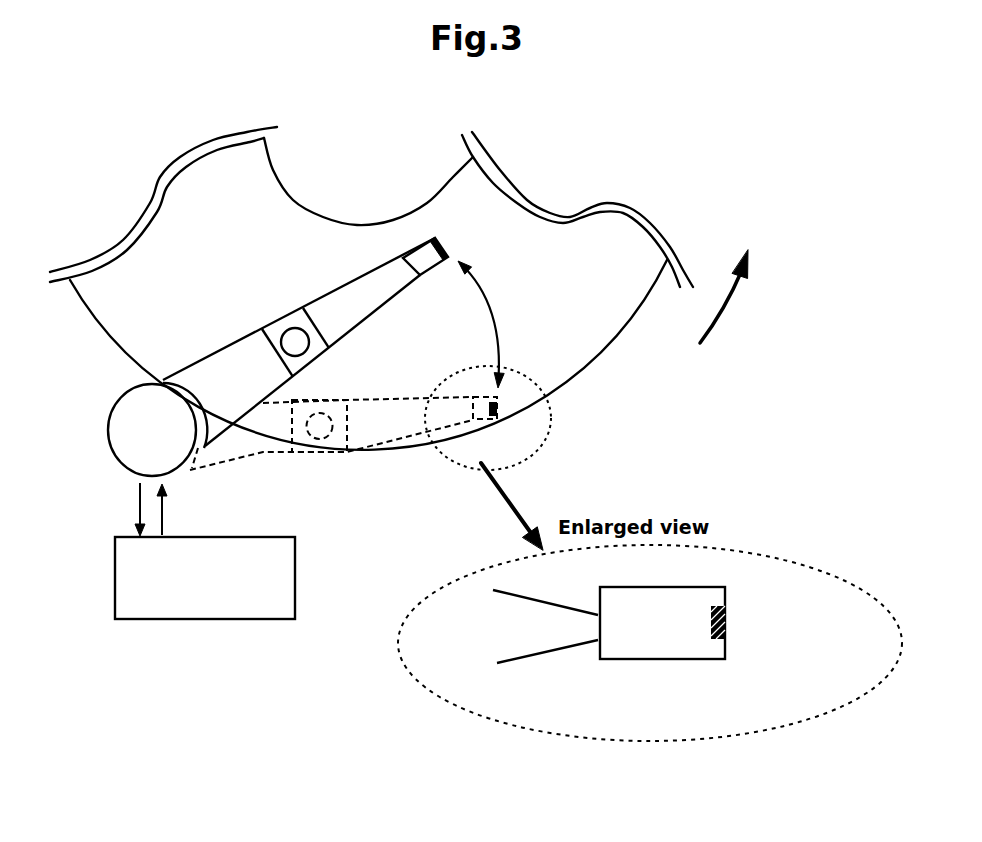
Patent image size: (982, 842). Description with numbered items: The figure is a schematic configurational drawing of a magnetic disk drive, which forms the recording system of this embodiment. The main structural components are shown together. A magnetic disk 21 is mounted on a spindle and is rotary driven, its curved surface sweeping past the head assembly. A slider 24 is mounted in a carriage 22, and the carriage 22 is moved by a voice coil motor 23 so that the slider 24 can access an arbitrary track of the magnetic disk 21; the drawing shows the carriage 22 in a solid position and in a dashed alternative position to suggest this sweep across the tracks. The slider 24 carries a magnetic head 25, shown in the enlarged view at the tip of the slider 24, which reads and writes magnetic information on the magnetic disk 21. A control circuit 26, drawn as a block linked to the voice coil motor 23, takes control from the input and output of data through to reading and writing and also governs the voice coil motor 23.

The magnetic disk 21 is at (173, 210).
The carriage 22 is at (333, 303).
The voice coil motor 23 is at (137, 423).
The slider 24 is at (493, 427).
The magnetic head 25 is at (736, 622).
The control circuit 26 is at (195, 628).